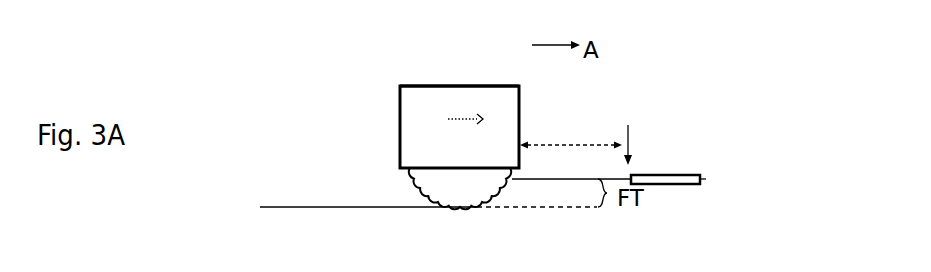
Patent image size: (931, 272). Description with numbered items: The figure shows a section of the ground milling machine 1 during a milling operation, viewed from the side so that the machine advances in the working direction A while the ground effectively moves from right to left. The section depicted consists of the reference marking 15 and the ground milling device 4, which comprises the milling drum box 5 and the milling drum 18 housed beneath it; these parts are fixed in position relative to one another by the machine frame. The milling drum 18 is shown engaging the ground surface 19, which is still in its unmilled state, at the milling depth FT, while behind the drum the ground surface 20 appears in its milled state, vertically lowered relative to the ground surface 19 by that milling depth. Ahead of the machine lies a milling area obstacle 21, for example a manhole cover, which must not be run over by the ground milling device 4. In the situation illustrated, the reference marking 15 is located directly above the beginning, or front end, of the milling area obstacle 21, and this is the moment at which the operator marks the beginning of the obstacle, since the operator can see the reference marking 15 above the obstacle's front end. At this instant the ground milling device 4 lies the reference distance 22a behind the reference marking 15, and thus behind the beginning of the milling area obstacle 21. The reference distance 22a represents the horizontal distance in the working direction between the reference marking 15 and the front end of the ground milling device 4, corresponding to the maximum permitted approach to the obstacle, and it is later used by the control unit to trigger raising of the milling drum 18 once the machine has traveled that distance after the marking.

The ground milling machine 1 is at (374, 52).
The ground milling device 4 is at (415, 117).
The milling drum box 5 is at (462, 95).
The reference marking 15 is at (637, 138).
The milling drum 18 is at (487, 197).
The ground surface in unmilled state 19 is at (705, 178).
The ground surface in milled state 20 is at (277, 207).
The milling area obstacle 21 is at (687, 182).
The reference distance 22a is at (571, 134).